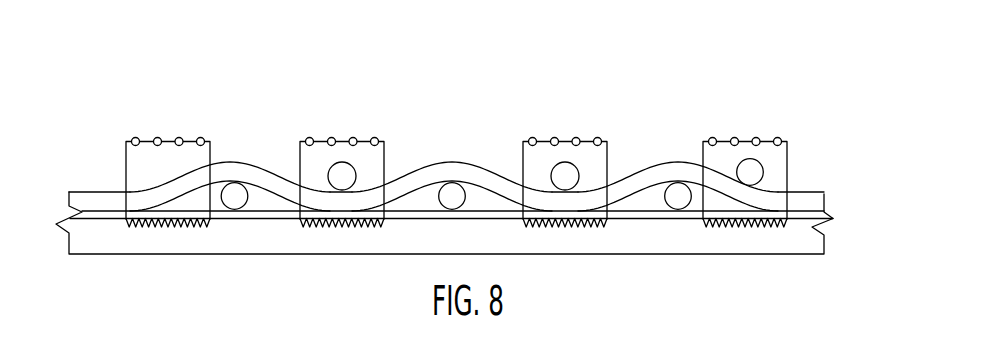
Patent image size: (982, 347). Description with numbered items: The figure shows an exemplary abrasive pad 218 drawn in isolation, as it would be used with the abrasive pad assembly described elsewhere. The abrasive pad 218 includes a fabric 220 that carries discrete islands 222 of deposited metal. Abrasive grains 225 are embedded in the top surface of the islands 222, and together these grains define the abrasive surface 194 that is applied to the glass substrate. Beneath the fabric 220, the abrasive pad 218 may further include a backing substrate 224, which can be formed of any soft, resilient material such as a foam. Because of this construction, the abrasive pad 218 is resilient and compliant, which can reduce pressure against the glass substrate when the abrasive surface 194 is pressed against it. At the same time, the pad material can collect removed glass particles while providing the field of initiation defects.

The abrasive pad 218 is at (444, 152).
The abrasive surface 194 is at (620, 126).
The fabric 220 is at (452, 164).
The islands 222 is at (200, 154).
The abrasive grains 225 is at (374, 138).
The backing substrate 224 is at (632, 237).